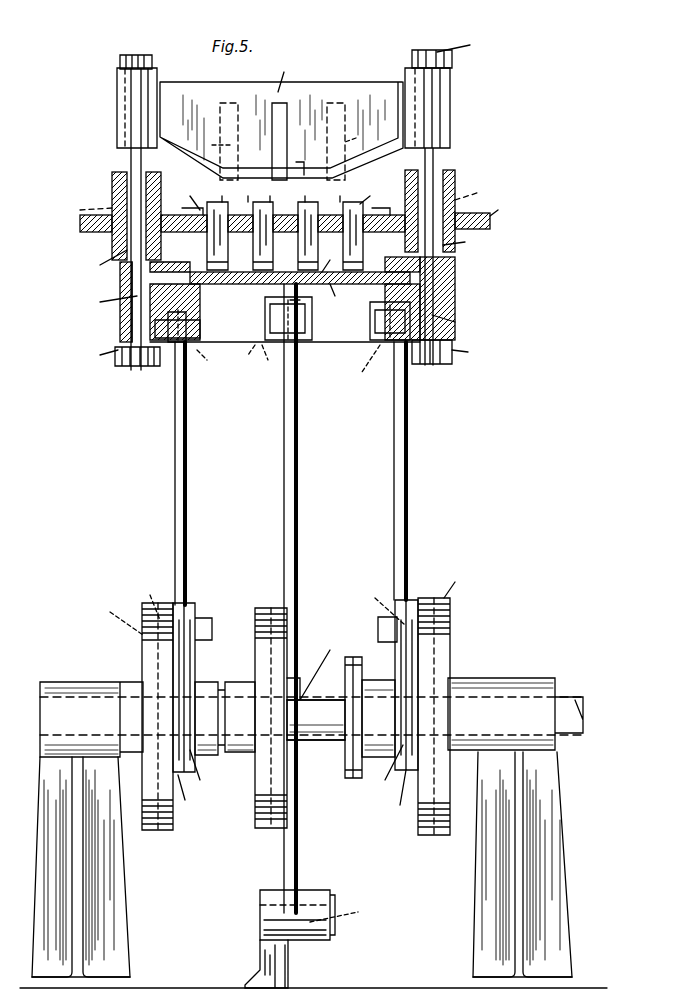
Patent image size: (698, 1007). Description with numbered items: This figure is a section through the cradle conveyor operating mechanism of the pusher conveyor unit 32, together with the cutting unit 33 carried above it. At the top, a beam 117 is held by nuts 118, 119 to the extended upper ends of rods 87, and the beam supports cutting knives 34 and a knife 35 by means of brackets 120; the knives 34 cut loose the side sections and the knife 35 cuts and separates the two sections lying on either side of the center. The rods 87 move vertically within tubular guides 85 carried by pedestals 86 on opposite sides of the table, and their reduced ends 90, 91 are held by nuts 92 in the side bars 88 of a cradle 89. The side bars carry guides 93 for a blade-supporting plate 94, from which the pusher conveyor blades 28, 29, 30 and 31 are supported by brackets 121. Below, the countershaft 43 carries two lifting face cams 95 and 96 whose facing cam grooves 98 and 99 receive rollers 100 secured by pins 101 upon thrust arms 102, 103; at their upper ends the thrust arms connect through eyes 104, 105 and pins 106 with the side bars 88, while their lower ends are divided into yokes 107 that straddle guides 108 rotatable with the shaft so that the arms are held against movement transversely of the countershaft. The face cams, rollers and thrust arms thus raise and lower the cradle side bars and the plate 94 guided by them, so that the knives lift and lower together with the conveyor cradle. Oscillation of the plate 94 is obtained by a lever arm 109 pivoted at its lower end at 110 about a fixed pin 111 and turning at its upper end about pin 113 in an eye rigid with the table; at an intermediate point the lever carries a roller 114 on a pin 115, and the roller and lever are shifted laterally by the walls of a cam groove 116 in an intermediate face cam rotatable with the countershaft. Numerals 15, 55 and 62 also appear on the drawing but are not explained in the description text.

The frame plate 15 is at (503, 205).
The pusher conveyor blade 28 is at (189, 196).
The pusher conveyor blade 29 is at (247, 192).
The pusher conveyor blade 30 is at (307, 192).
The pusher conveyor blade 31 is at (374, 192).
The pusher conveyor unit 32 is at (228, 284).
The cutting unit 33 is at (279, 118).
The cutting knife 34 is at (283, 191).
The knife 35 is at (271, 192).
The countershaft 43 is at (570, 697).
The hopper outlet 55 is at (301, 155).
The plate 62 is at (80, 220).
The tubular guide 85 is at (470, 168).
The pedestal 86 is at (277, 194).
The rod 87 is at (285, 255).
The side bar 88 is at (462, 300).
The cradle 89 is at (287, 359).
The reduced end 90 is at (470, 78).
The reduced end 91 is at (273, 311).
The nut 92 is at (445, 378).
The guide 93 is at (462, 270).
The blade-supporting plate 94 is at (338, 278).
The lifting face cam 95 is at (148, 595).
The lifting face cam 96 is at (458, 582).
The cam groove 98 is at (142, 650).
The cam groove 99 is at (450, 622).
The roller 100 is at (475, 650).
The pin 101 is at (246, 607).
The thrust arm 102 is at (174, 504).
The thrust arm 103 is at (410, 462).
The eye 104 is at (211, 363).
The eye 105 is at (366, 366).
The pin 106 is at (345, 352).
The yoke 107 is at (296, 770).
The guide 108 is at (295, 794).
The lever arm 109 is at (299, 437).
The pivot 110 is at (320, 892).
The fixed pin 111 is at (315, 946).
The pin 113 is at (256, 364).
The roller 114 is at (300, 710).
The pin 115 is at (316, 685).
The cam groove 116 is at (270, 770).
The beam 117 is at (281, 117).
The nut 118 is at (468, 45).
The nut 119 is at (138, 55).
The bracket 120 is at (285, 141).
The bracket 121 is at (305, 236).